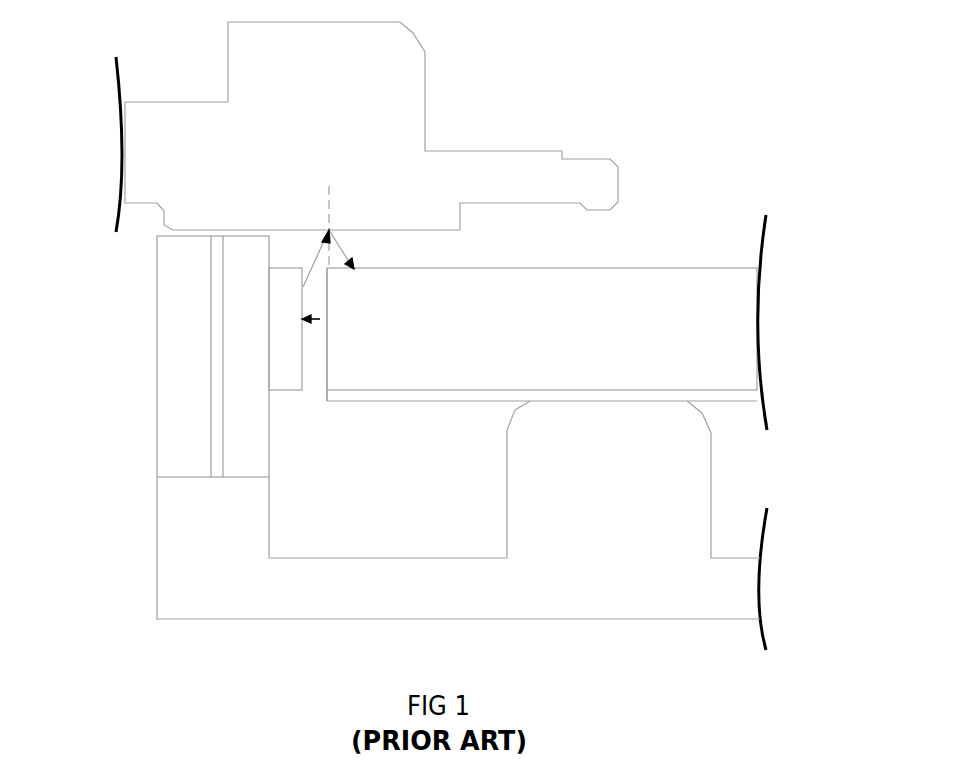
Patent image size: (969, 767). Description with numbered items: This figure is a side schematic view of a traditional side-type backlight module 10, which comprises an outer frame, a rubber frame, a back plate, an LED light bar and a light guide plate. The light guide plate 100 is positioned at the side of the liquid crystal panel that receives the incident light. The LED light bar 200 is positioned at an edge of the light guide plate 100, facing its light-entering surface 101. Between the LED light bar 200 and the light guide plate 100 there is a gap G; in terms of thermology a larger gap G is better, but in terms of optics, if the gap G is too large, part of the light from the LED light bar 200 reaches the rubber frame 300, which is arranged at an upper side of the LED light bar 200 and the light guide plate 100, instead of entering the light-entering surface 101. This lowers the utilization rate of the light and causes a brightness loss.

The rubber frame 300 is at (267, 148).
The LED light bar 200 is at (288, 343).
The light guide plate 100 is at (633, 308).
The light-entering surface 101 is at (327, 290).
The gap G is at (317, 336).
The backlight module 10 is at (700, 145).